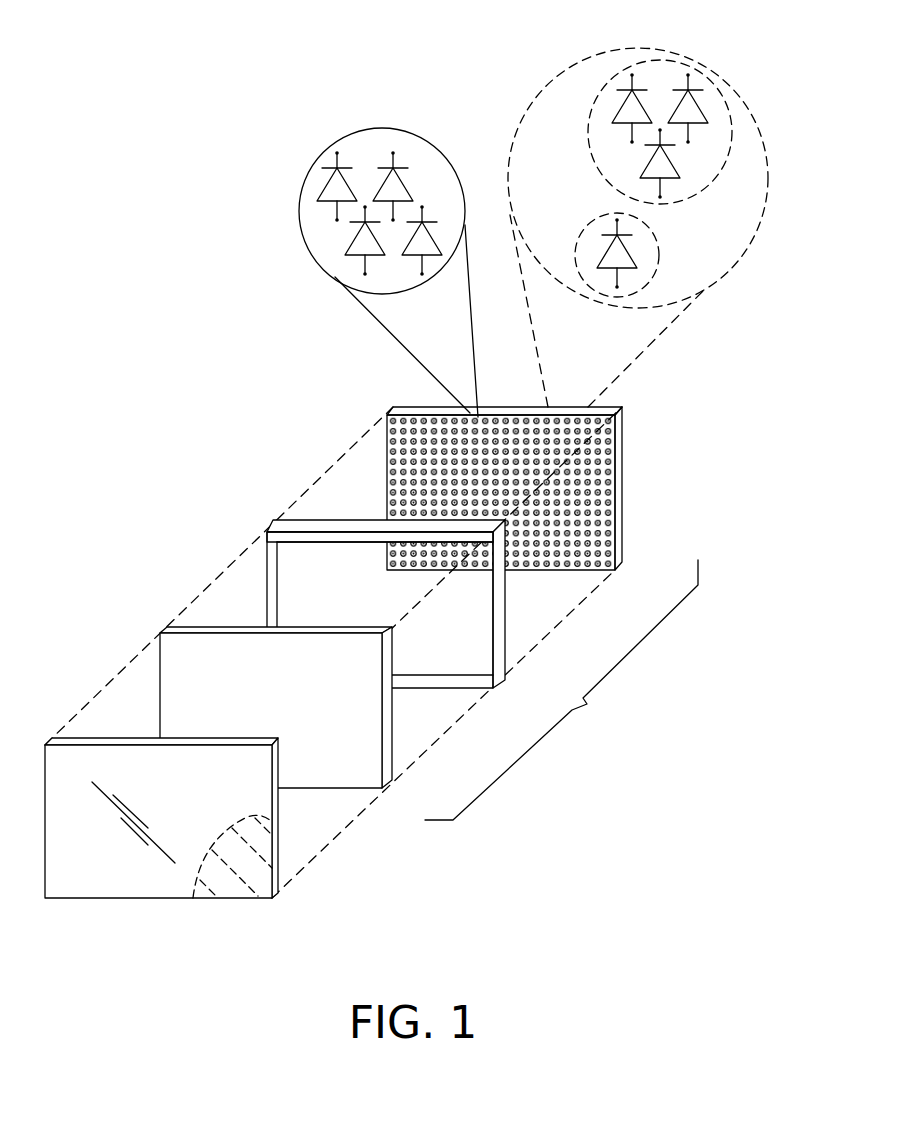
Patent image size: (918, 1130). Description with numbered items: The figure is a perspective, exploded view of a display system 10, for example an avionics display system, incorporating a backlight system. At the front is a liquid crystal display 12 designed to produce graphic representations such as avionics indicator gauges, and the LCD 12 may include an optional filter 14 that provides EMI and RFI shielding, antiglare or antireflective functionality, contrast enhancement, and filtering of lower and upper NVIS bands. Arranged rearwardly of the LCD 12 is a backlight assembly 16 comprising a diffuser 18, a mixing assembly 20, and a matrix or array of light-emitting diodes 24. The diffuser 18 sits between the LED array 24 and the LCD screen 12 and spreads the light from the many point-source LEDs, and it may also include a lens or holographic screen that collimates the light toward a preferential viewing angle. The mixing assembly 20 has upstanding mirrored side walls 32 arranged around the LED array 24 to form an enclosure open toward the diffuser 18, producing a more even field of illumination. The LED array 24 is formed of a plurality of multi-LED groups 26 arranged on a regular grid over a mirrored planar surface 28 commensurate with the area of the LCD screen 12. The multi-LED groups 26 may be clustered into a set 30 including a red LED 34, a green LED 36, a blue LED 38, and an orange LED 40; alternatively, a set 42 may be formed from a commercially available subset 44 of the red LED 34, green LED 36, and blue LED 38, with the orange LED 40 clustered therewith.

The display system 10 is at (170, 546).
The liquid crystal display 12 is at (93, 901).
The filter 14 is at (243, 898).
The backlight assembly 16 is at (561, 690).
The diffuser 18 is at (400, 731).
The mixing assembly 20 is at (500, 604).
The LED array 24 is at (620, 482).
The multi-LED groups 26 is at (612, 433).
The mirrored planar surface 28 is at (626, 527).
The set 30 is at (400, 131).
The mirrored side walls 32 is at (296, 579).
The red LED 34 is at (324, 180).
The green LED 36 is at (403, 182).
The blue LED 38 is at (352, 238).
The orange LED 40 is at (430, 234).
The set of LEDs 42 is at (610, 53).
The subset 44 is at (735, 138).